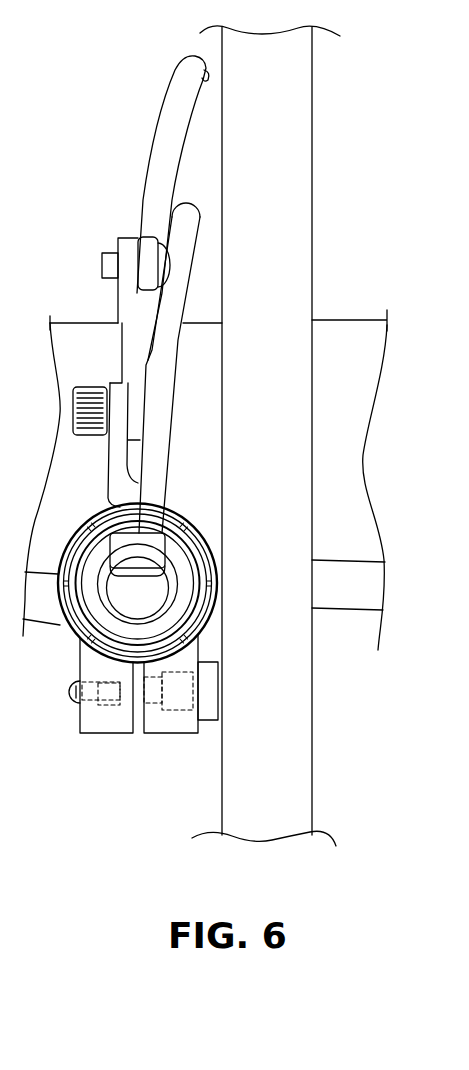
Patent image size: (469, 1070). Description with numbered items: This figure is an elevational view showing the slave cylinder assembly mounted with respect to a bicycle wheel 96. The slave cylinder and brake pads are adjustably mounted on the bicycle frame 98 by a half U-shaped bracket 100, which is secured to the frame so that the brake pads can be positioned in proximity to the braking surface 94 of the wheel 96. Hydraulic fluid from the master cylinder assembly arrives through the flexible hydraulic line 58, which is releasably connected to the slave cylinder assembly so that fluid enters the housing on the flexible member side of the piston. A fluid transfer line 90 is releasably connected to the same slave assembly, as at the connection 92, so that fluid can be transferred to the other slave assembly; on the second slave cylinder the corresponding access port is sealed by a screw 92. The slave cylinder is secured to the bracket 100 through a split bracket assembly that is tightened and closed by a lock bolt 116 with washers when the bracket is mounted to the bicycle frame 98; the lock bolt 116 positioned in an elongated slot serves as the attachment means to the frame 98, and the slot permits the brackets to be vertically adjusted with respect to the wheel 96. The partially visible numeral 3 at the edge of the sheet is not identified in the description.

The reference (partially shown) 3 is at (4, 97).
The hydraulic line 58 is at (157, 147).
The fluid transfer line 90 is at (157, 395).
The screw 92 is at (125, 528).
The braking surface 94 is at (335, 595).
The wheel 96 is at (342, 338).
The bicycle frame 98 is at (240, 802).
The half U-shaped bracket 100 is at (128, 313).
The lock bolt 116 is at (82, 388).